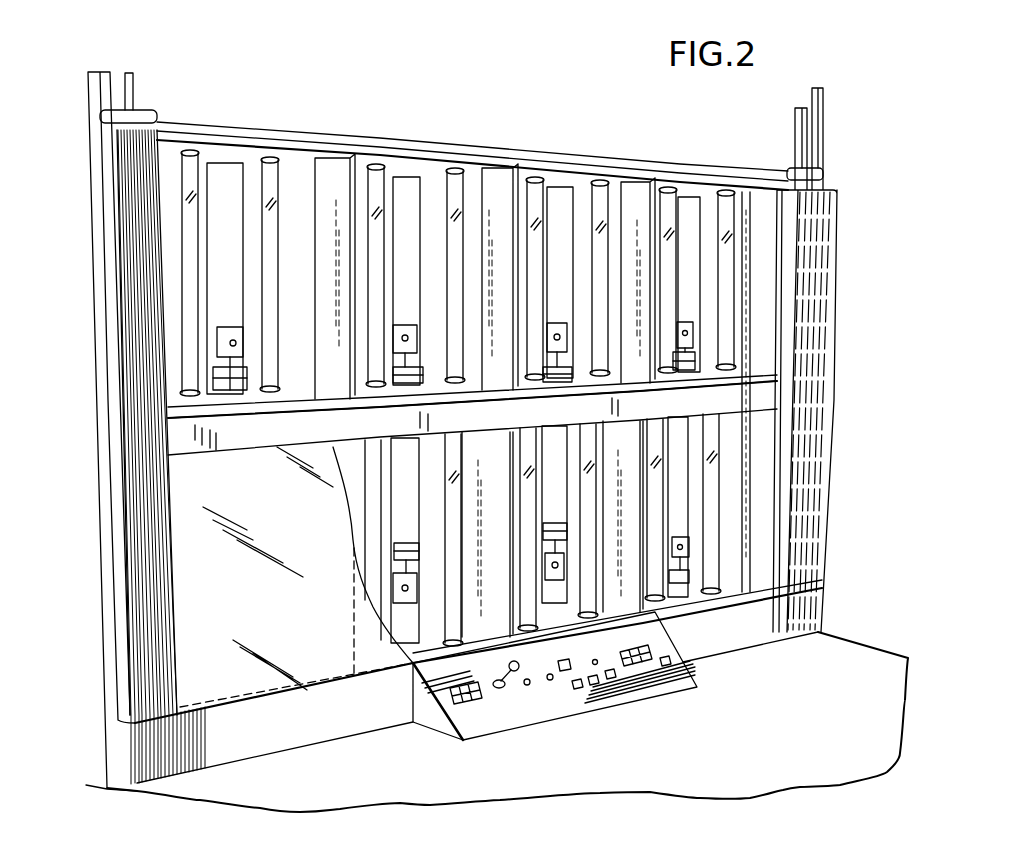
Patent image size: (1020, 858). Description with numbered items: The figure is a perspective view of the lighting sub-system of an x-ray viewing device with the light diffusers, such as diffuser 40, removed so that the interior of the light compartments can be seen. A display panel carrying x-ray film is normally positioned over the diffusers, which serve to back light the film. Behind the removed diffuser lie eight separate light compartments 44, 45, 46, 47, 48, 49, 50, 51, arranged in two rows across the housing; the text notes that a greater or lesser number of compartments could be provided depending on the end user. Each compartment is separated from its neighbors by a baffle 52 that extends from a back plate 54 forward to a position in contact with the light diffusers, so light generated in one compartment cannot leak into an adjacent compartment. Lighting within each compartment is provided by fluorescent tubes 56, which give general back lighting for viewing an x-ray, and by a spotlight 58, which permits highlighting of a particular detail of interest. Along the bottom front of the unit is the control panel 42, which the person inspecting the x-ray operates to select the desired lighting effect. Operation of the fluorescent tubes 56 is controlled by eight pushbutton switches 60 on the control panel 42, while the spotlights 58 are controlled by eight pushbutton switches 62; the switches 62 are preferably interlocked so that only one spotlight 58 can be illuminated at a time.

The light diffuser 40 is at (193, 500).
The control panel 42 is at (612, 695).
The light compartment 44 is at (231, 153).
The light compartment 45 is at (407, 165).
The light compartment 46 is at (570, 178).
The light compartment 47 is at (705, 188).
The light compartment 48 is at (256, 687).
The light compartment 49 is at (412, 668).
The light compartment 50 is at (553, 628).
The light compartment 51 is at (695, 600).
The baffle 52 is at (650, 197).
The back plate 54 is at (310, 241).
The fluorescent tube 56 is at (272, 243).
The spotlight 58 is at (227, 343).
The pushbutton switch 60 is at (633, 667).
The pushbutton switch 62 is at (473, 698).